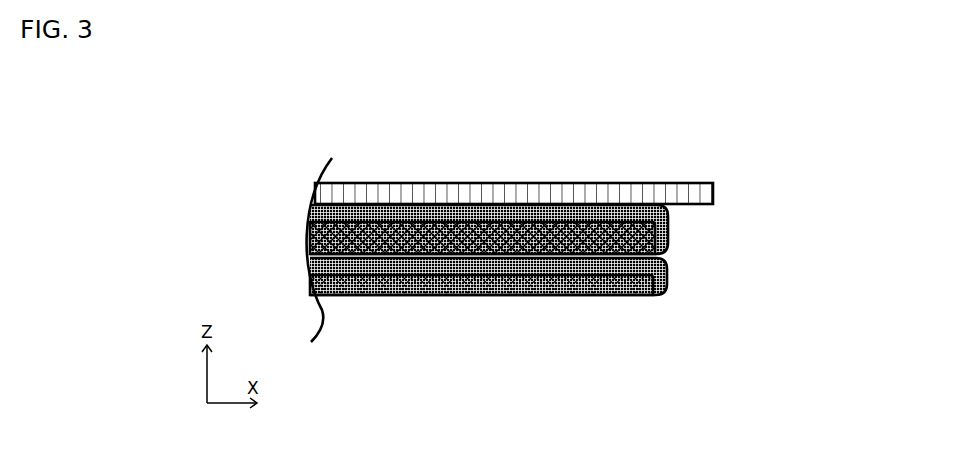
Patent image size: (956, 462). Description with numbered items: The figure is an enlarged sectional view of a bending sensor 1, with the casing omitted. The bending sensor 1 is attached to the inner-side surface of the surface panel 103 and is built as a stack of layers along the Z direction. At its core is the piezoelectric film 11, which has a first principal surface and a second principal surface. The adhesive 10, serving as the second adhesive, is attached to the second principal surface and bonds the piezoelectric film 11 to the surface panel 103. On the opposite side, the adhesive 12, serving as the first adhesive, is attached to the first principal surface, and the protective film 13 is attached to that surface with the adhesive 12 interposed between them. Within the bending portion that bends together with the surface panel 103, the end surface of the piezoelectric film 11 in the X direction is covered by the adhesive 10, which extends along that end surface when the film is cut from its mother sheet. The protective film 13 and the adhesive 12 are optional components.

The bending sensor 1 is at (549, 258).
The surface panel 103 is at (444, 183).
The adhesive 10 is at (668, 229).
The piezoelectric film 11 is at (607, 222).
The adhesive 12 is at (668, 268).
The protective film 13 is at (555, 294).